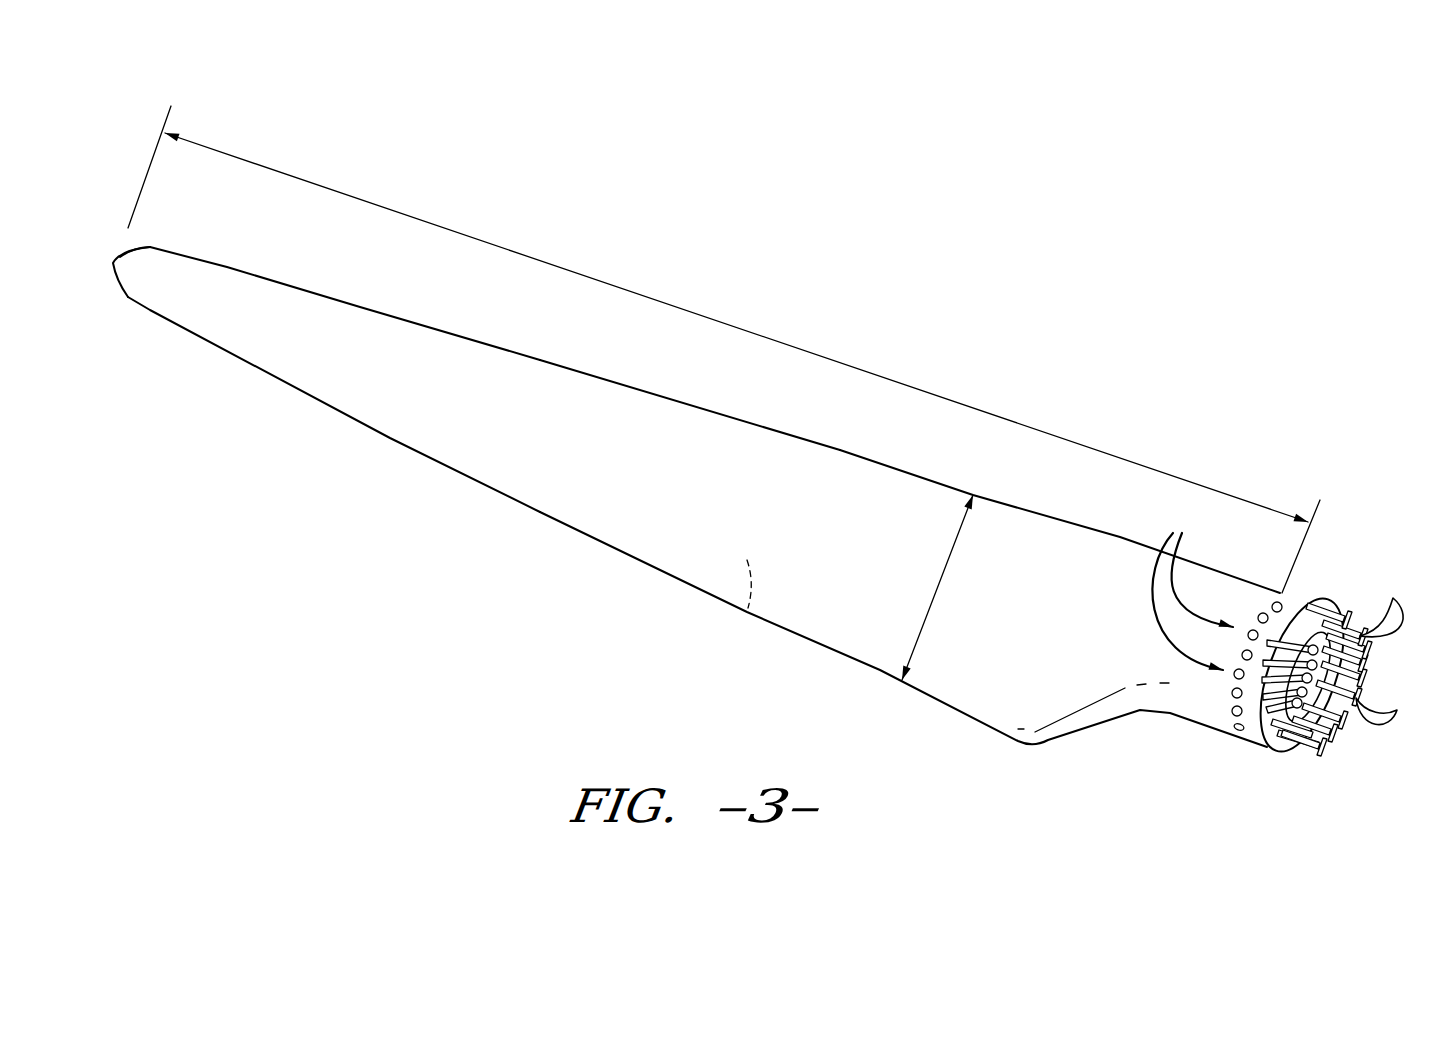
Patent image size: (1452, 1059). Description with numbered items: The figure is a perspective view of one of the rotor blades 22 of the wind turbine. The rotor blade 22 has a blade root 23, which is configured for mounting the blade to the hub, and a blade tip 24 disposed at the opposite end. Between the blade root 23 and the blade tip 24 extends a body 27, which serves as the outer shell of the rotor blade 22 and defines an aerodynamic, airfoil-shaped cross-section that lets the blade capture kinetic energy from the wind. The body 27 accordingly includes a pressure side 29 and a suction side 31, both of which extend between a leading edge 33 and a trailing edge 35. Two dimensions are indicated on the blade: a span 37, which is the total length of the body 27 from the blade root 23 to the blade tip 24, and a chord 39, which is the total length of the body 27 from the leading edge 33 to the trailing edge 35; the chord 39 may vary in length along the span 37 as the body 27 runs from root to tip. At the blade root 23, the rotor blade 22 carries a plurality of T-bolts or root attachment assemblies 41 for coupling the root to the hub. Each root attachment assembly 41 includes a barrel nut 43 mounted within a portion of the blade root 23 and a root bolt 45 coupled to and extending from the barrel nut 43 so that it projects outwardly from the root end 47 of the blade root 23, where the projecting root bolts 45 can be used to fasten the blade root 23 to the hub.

The rotor blade 22 is at (1167, 353).
The blade root 23 is at (1223, 720).
The blade tip 24 is at (113, 263).
The body 27 is at (571, 407).
The pressure side 29 is at (747, 612).
The suction side 31 is at (450, 427).
The leading edge 33 is at (798, 433).
The trailing edge 35 is at (579, 531).
The span 37 is at (777, 338).
The chord 39 is at (935, 600).
The root attachment assembly 41 is at (1192, 582).
The barrel nut 43 is at (1271, 606).
The root bolt 45 is at (1394, 643).
The root end 47 is at (1287, 753).